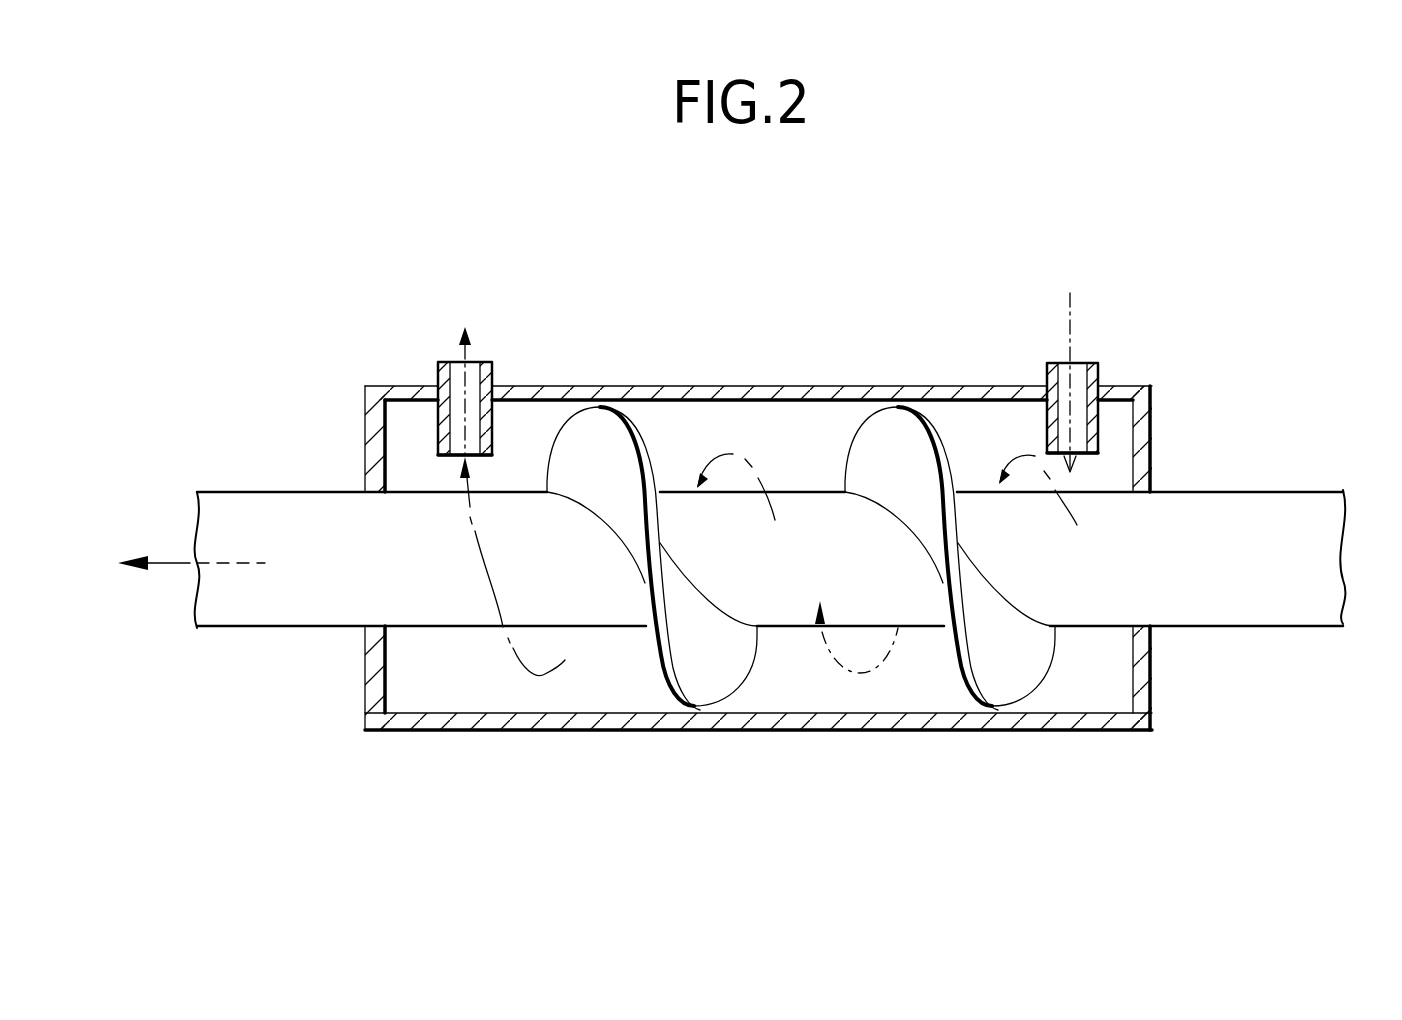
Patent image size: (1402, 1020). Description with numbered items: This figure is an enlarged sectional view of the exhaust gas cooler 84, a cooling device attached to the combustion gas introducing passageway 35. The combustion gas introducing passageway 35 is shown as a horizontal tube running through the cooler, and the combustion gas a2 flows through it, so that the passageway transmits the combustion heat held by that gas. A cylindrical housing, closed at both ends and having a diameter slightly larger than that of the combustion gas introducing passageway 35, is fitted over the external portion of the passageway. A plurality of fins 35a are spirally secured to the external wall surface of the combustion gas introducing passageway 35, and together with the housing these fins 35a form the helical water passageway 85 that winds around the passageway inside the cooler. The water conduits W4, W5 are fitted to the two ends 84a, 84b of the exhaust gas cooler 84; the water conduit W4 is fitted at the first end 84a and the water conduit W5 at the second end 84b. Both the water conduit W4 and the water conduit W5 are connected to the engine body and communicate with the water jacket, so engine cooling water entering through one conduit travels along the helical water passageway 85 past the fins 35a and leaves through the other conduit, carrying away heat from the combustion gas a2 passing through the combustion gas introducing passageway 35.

The exhaust gas cooler 84 is at (803, 387).
The end of the exhaust gas cooler 84a is at (365, 448).
The end of the exhaust gas cooler 84b is at (1150, 432).
The helical water passageway 85 is at (815, 455).
The combustion gas introducing passageway 35 is at (273, 628).
The fin 35a is at (608, 397).
The water conduit W4 is at (438, 372).
The water conduit W5 is at (1100, 367).
The combustion gas a2 is at (158, 566).